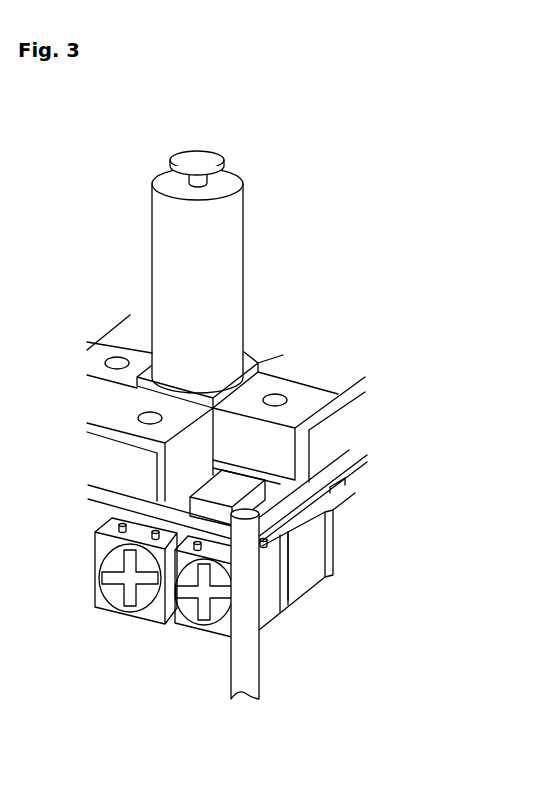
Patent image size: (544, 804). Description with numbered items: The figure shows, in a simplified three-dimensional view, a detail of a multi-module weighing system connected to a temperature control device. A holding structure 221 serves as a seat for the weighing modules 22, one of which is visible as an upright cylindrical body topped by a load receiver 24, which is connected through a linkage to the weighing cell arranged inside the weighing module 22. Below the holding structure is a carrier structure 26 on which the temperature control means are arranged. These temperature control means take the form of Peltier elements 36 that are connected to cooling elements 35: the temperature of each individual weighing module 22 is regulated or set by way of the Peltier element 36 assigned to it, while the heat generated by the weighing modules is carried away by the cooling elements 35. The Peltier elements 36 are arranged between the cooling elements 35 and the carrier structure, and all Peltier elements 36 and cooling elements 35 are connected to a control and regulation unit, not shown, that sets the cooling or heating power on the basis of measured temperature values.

The weighing module 22 is at (213, 267).
The load receiver 24 is at (197, 168).
The holding structure 221 is at (335, 428).
The carrier structure 26 is at (280, 500).
The cooling element 35 is at (308, 563).
The Peltier element 36 is at (225, 488).